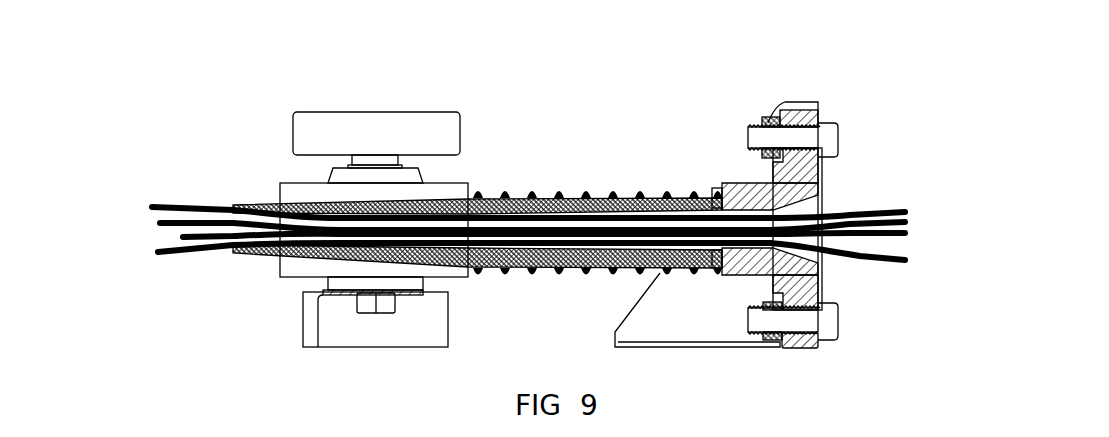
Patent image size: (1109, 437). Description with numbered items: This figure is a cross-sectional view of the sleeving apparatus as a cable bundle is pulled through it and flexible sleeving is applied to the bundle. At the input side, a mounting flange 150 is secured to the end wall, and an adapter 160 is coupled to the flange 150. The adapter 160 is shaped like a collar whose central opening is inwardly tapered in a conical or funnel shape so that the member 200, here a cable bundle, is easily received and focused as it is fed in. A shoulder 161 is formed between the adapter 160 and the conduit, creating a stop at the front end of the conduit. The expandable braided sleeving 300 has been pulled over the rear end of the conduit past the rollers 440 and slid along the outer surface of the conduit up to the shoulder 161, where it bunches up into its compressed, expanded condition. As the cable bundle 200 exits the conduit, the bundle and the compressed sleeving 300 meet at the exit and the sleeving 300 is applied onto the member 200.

The rollers 440 is at (293, 190).
The member 200 is at (197, 220).
The flexible sleeving 300 is at (497, 192).
The adapter 160 is at (735, 183).
The shoulder 161 is at (713, 187).
The mounting flange 150 is at (808, 113).